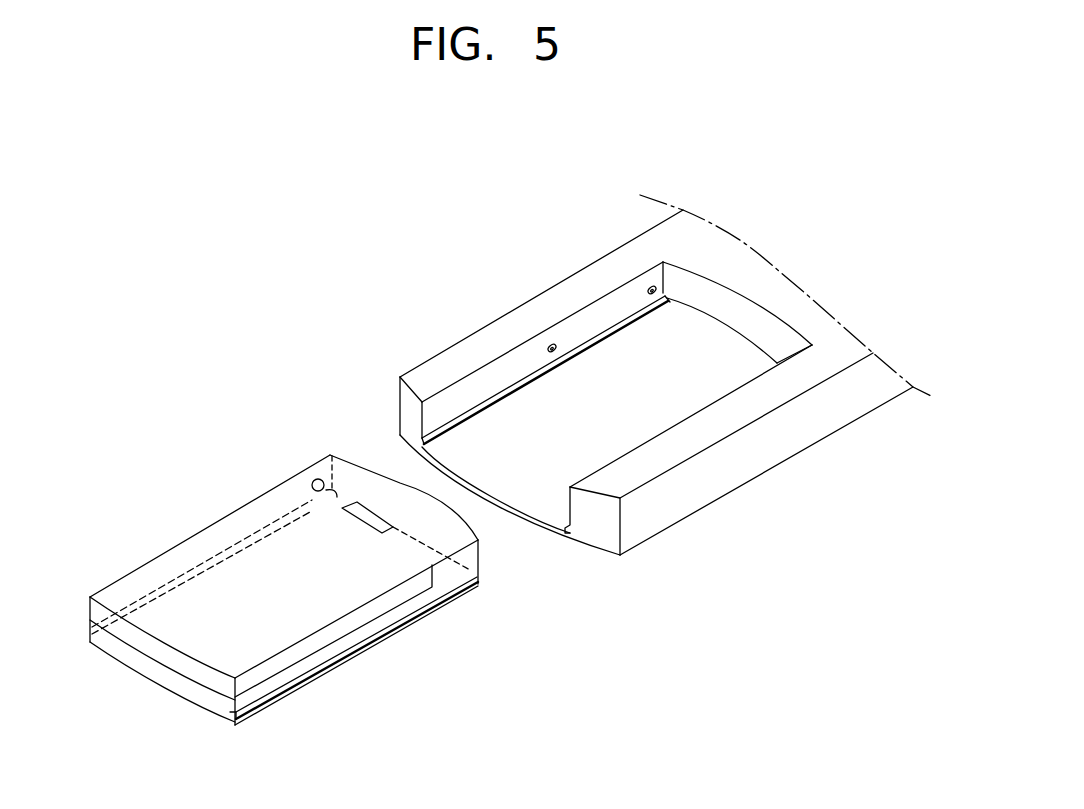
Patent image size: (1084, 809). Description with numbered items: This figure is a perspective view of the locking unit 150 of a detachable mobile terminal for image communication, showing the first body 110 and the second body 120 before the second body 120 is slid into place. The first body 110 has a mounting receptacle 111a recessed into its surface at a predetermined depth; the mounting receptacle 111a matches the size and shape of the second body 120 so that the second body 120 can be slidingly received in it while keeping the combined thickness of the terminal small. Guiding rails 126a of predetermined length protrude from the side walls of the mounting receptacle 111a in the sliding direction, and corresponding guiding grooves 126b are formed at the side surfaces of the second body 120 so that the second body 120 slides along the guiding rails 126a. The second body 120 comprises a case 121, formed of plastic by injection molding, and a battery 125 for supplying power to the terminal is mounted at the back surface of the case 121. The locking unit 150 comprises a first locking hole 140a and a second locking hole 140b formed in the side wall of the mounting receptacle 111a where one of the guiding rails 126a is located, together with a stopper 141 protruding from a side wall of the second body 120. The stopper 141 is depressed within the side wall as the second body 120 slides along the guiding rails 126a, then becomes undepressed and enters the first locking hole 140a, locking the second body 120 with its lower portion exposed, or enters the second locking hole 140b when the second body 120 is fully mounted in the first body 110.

The first body 110 is at (763, 500).
The mounting receptacle 111a is at (604, 446).
The second body 120 is at (378, 668).
The case 121 is at (373, 480).
The battery 125 is at (212, 622).
The guiding rails 126a is at (627, 327).
The guiding grooves 126b is at (448, 598).
The first locking hole 140a is at (551, 345).
The second locking hole 140b is at (651, 287).
The stopper 141 is at (314, 480).
The locking unit 150 is at (387, 199).